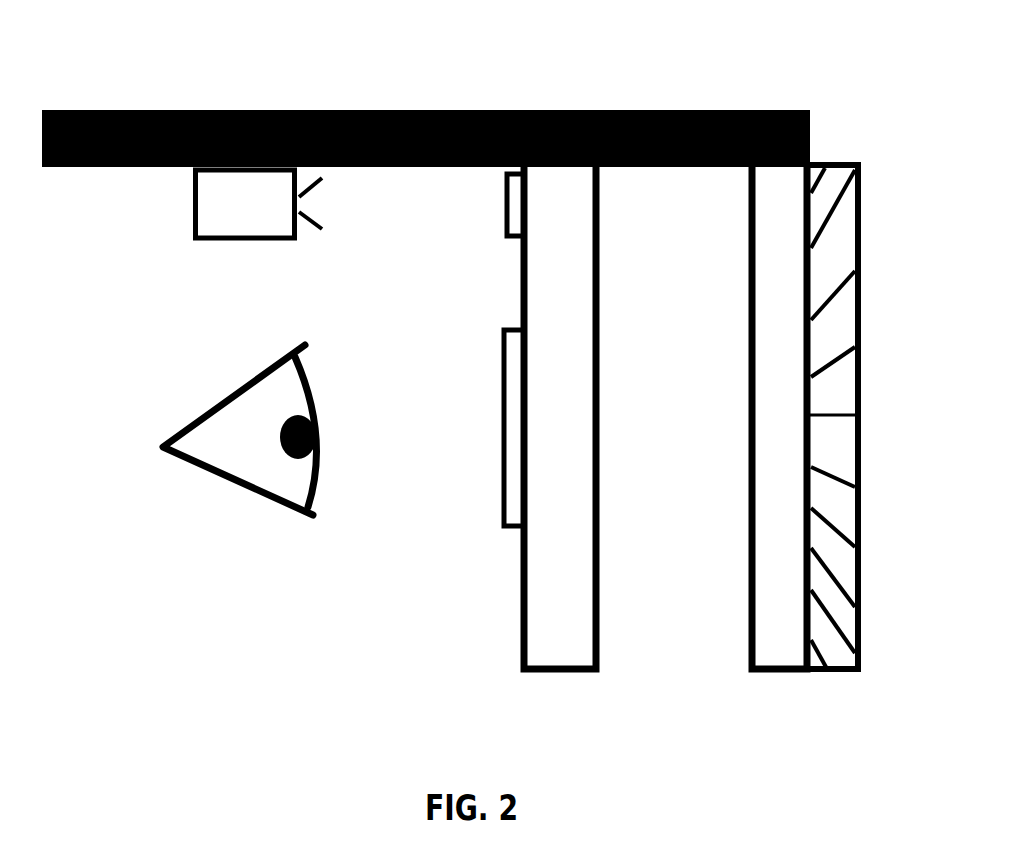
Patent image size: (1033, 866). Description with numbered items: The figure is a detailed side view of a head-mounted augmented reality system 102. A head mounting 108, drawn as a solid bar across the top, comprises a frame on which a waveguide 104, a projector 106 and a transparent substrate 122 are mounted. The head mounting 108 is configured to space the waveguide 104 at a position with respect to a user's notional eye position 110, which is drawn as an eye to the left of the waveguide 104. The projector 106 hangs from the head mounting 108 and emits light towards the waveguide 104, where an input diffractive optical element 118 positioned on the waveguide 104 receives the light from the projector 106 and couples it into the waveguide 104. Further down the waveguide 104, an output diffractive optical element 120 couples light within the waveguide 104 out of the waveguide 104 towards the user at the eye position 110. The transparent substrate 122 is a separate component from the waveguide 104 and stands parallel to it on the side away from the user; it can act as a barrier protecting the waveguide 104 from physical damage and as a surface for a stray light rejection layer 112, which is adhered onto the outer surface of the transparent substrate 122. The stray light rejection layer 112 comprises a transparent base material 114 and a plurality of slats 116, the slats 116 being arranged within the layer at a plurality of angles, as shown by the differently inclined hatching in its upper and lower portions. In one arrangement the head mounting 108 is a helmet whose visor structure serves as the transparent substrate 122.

The head-mounted augmented reality system 102 is at (662, 110).
The waveguide 104 is at (558, 627).
The projector 106 is at (237, 222).
The head mounting 108 is at (80, 170).
The user's notional eye position 110 is at (270, 500).
The stray light rejection layer 112 is at (862, 215).
The transparent base material 114 is at (838, 335).
The slats 116 is at (827, 525).
The input diffractive optical element 118 is at (512, 203).
The output diffractive optical element 120 is at (513, 360).
The transparent substrate 122 is at (773, 613).